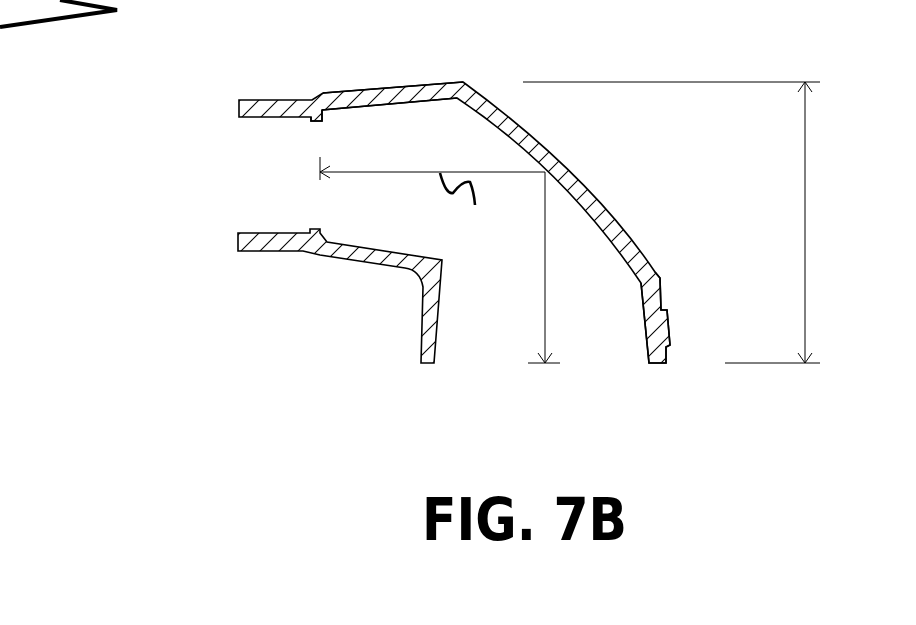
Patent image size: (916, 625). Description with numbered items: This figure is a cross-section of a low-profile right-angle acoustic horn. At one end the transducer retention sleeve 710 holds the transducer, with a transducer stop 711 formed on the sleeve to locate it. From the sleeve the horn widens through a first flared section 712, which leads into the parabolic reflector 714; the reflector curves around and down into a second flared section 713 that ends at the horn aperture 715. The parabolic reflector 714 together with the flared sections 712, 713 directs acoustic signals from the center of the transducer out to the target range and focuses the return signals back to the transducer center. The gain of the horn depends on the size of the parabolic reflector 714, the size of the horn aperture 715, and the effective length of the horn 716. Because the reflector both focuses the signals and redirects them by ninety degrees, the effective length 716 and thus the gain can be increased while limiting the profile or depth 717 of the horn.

The transducer retention sleeve 710 is at (284, 232).
The transducer stop 711 is at (310, 122).
The flared section 712 is at (455, 73).
The flared section 713 is at (675, 278).
The parabolic reflector 714 is at (590, 187).
The horn aperture 715 is at (435, 382).
The effective length of the horn 716 is at (545, 257).
The profile or depth of the horn 717 is at (805, 212).